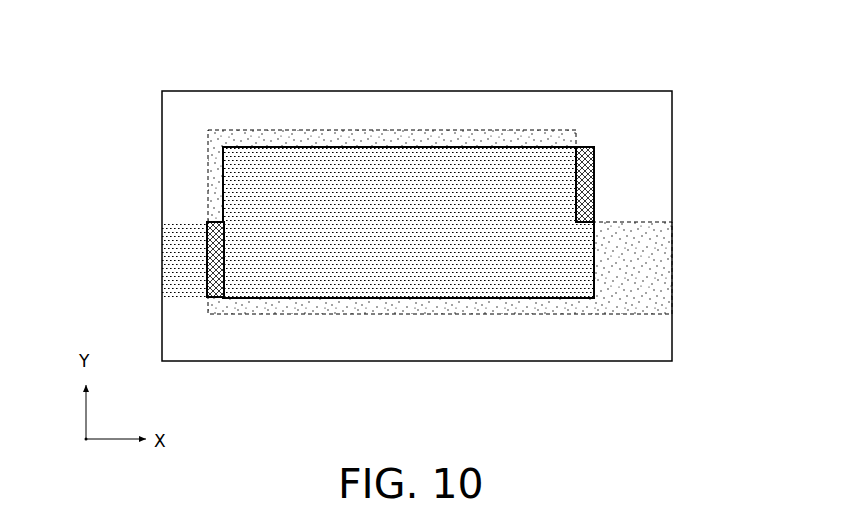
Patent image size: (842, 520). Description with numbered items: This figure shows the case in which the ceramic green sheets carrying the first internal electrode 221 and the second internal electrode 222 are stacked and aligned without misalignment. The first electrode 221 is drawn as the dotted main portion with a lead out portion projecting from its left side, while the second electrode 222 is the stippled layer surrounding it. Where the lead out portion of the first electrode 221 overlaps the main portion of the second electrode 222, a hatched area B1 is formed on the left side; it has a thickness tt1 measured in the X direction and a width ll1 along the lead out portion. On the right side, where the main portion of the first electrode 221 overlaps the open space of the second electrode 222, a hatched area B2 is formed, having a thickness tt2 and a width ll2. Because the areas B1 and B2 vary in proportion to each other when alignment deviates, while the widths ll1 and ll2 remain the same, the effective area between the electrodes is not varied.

The first internal electrode 221 is at (356, 147).
The second internal electrode 222 is at (400, 130).
The area B1 is at (216, 298).
The area B2 is at (581, 146).
The thickness tt1 is at (207, 297).
The thickness tt2 is at (594, 147).
The width ll1 is at (207, 297).
The width ll2 is at (594, 147).